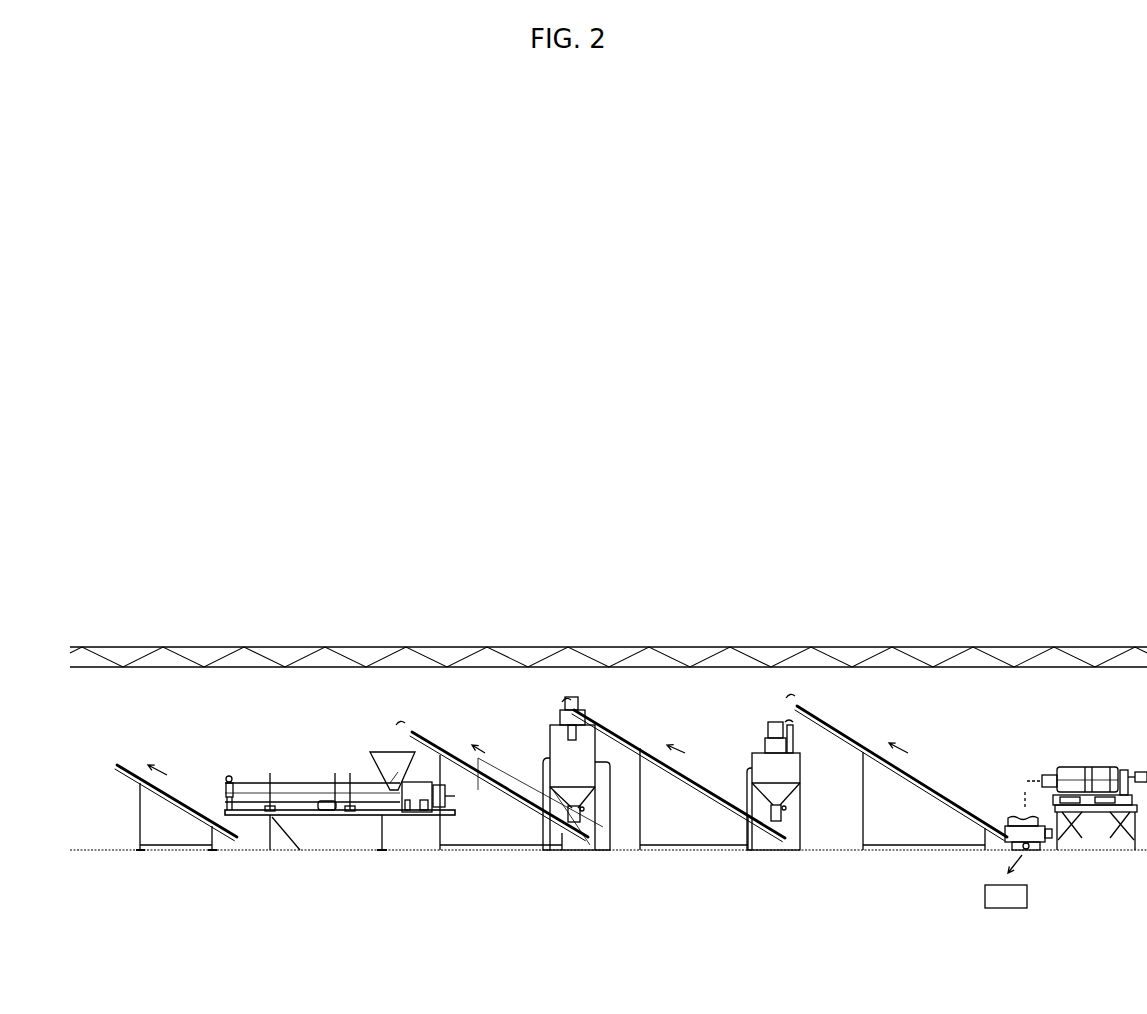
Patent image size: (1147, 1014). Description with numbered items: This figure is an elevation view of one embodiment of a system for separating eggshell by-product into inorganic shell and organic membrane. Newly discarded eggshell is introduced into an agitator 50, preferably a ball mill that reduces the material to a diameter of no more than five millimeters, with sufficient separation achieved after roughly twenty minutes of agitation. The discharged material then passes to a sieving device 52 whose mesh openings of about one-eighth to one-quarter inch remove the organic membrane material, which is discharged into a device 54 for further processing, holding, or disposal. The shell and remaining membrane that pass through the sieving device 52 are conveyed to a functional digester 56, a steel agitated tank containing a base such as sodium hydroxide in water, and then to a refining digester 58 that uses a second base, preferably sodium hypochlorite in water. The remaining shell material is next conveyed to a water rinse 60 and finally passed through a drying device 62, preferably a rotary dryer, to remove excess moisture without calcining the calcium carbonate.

The agitator 50 is at (1083, 768).
The sieving device 52 is at (1022, 814).
The device 54 is at (1032, 892).
The functional digester 56 is at (800, 772).
The refining digester 58 is at (597, 772).
The water rinse 60 is at (488, 778).
The drying device 62 is at (362, 772).